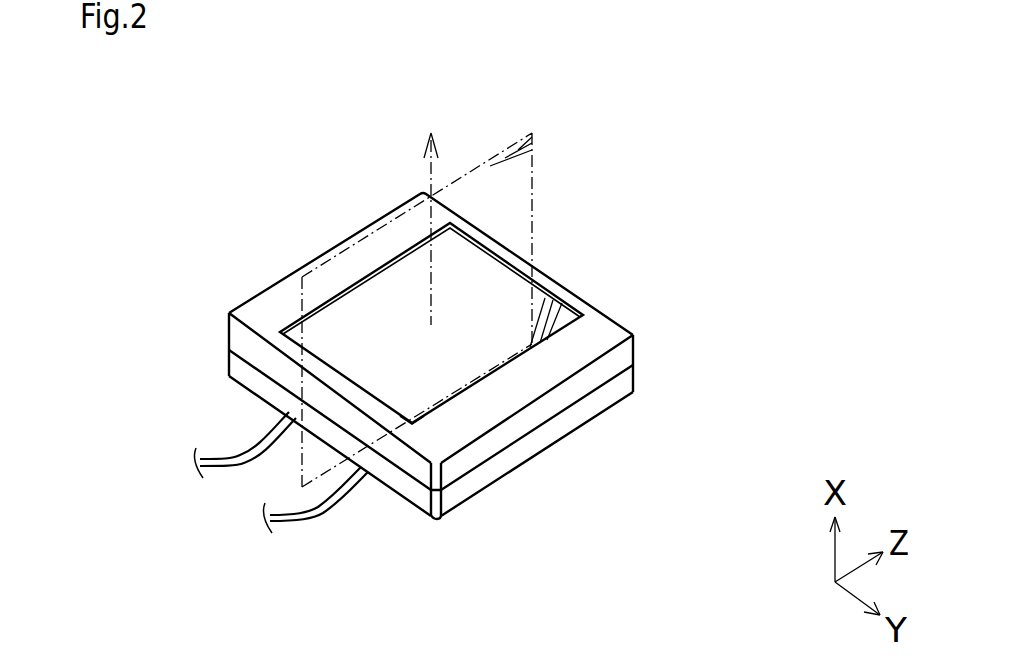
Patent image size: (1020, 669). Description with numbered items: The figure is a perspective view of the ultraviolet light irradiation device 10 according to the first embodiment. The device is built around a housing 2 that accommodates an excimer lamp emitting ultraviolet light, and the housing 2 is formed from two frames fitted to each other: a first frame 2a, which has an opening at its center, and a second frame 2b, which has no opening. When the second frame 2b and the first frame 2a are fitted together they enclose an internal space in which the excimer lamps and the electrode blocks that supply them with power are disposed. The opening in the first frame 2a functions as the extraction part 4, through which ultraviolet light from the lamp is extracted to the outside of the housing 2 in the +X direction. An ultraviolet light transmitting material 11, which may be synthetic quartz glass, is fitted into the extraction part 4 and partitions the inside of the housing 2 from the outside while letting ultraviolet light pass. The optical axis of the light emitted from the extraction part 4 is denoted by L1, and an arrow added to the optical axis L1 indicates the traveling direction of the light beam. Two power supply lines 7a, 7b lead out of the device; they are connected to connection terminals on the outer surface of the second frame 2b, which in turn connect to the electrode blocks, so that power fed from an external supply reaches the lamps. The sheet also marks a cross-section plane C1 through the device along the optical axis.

The ultraviolet light irradiation device 10 is at (482, 331).
The housing 2 is at (499, 356).
The first frame 2a is at (613, 363).
The second frame 2b is at (583, 408).
The extraction part 4 is at (406, 262).
The ultraviolet light transmitting material 11 is at (548, 300).
The power supply line 7a is at (222, 468).
The power supply line 7b is at (313, 513).
The optical axis L1 is at (430, 183).
The cross-section plane C1 is at (538, 173).